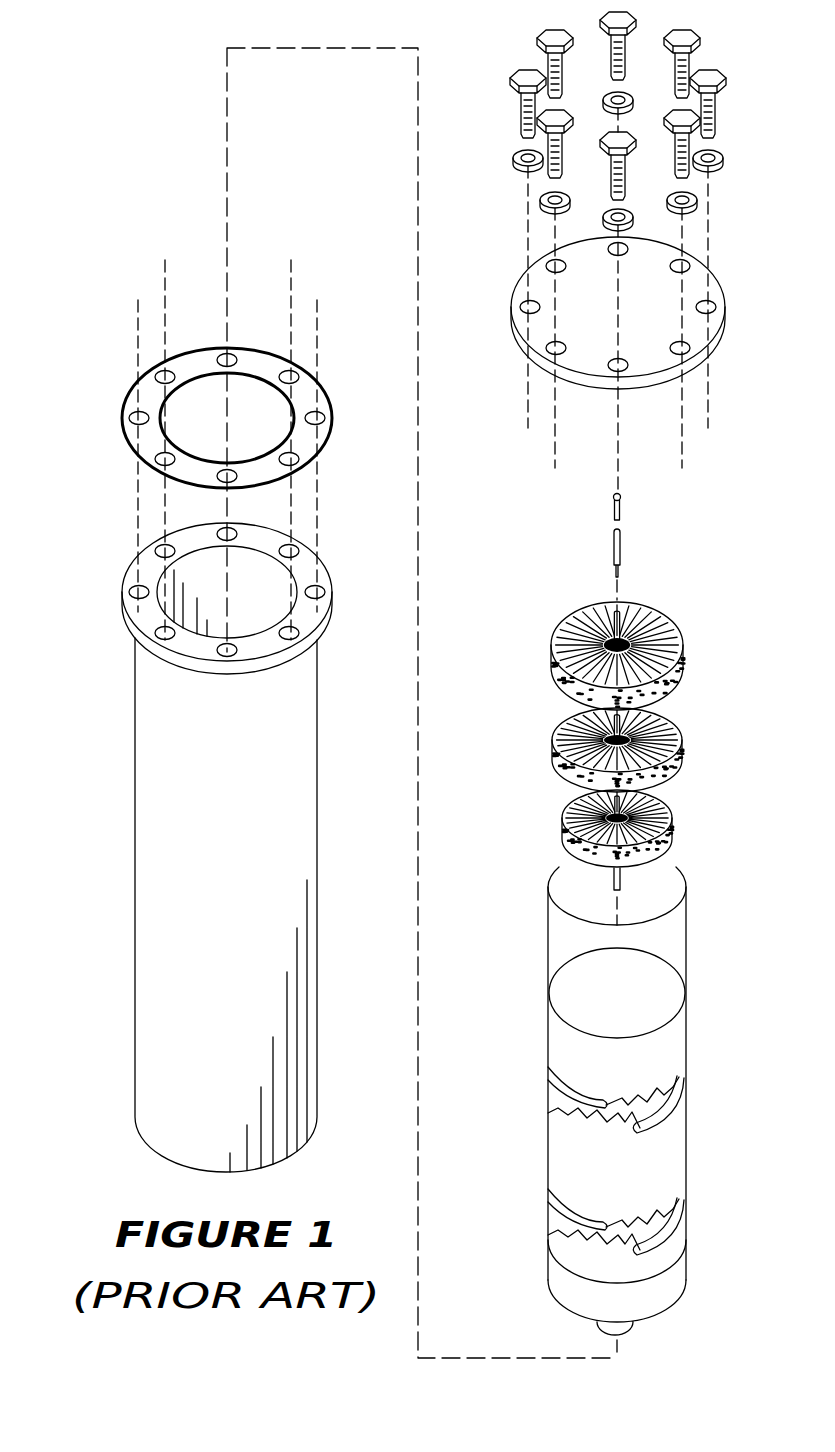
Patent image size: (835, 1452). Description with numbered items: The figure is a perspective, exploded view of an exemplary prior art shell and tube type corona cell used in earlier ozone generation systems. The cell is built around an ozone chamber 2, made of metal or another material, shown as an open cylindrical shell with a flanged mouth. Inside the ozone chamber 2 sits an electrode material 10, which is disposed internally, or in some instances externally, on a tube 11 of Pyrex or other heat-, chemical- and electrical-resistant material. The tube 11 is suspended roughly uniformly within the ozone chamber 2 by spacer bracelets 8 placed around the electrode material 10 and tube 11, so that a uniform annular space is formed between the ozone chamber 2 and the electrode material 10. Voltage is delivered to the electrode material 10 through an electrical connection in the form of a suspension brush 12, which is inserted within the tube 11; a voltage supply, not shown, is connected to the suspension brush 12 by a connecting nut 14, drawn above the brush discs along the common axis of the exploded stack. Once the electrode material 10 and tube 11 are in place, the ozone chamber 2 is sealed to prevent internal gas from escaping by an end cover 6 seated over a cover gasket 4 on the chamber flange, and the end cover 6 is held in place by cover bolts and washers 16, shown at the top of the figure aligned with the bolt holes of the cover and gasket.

The ozone chamber 2 is at (150, 773).
The cover gasket 4 is at (312, 443).
The end cover 6 is at (512, 322).
The spacer bracelets 8 is at (548, 1107).
The electrode material 10 is at (558, 1166).
The tube 11 is at (673, 934).
The suspension brush 12 is at (553, 720).
The connecting nut 14 is at (614, 497).
The cover bolts and washers 16 is at (508, 160).